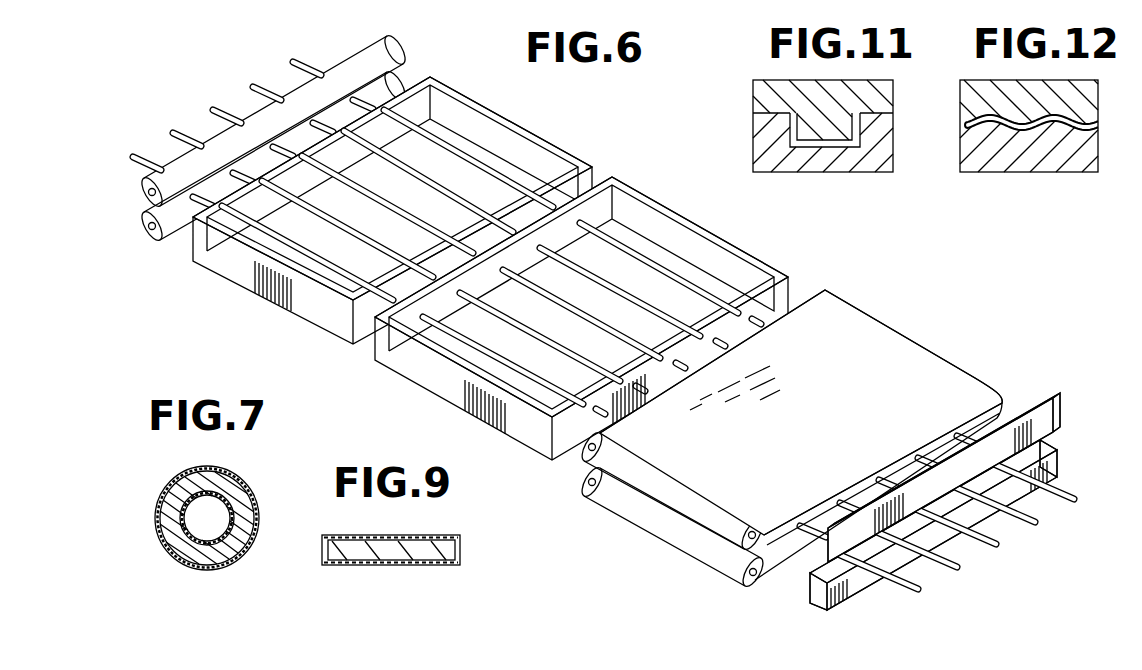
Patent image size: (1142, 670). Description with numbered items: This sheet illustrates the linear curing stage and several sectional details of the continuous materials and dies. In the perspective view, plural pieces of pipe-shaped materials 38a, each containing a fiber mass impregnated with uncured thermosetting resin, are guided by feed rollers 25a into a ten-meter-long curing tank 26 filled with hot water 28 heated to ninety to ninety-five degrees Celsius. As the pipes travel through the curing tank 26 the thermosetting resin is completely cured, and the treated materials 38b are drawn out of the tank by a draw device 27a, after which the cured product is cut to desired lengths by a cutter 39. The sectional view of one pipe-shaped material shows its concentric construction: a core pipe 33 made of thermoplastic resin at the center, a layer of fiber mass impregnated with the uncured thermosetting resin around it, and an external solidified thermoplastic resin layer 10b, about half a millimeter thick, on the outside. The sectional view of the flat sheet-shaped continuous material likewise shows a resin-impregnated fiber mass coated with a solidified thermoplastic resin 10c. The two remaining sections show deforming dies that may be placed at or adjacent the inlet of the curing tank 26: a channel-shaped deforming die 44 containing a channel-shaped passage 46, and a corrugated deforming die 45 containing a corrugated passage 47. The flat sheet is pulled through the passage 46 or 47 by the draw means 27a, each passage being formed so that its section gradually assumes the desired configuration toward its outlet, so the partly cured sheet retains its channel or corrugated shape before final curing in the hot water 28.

In FIG. 6, the feed rollers 25a is at (405, 58).
In FIG. 6, the pipe-shaped materials 38a is at (311, 66).
In FIG. 7, the pipe-shaped materials 38a is at (267, 495).
In FIG. 6, the hot water 28 is at (327, 277).
In FIG. 6, the curing tank 26 is at (413, 370).
In FIG. 6, the draw means 27a is at (933, 367).
In FIG. 6, the cutter 39 is at (1055, 415).
In FIG. 6, the treated materials 38b is at (1070, 490).
In FIG. 7, the core pipe 33 is at (190, 506).
In FIG. 7, the thermoplastic resin layer 10b is at (238, 546).
In FIG. 9, the solidified thermoplastic resin 10c is at (428, 563).
In FIG. 11, the channel-shaped deforming die 44 is at (877, 160).
In FIG. 11, the channel-shaped passage 46 is at (835, 143).
In FIG. 12, the corrugated deforming die 45 is at (970, 145).
In FIG. 12, the corrugated passage 47 is at (970, 120).